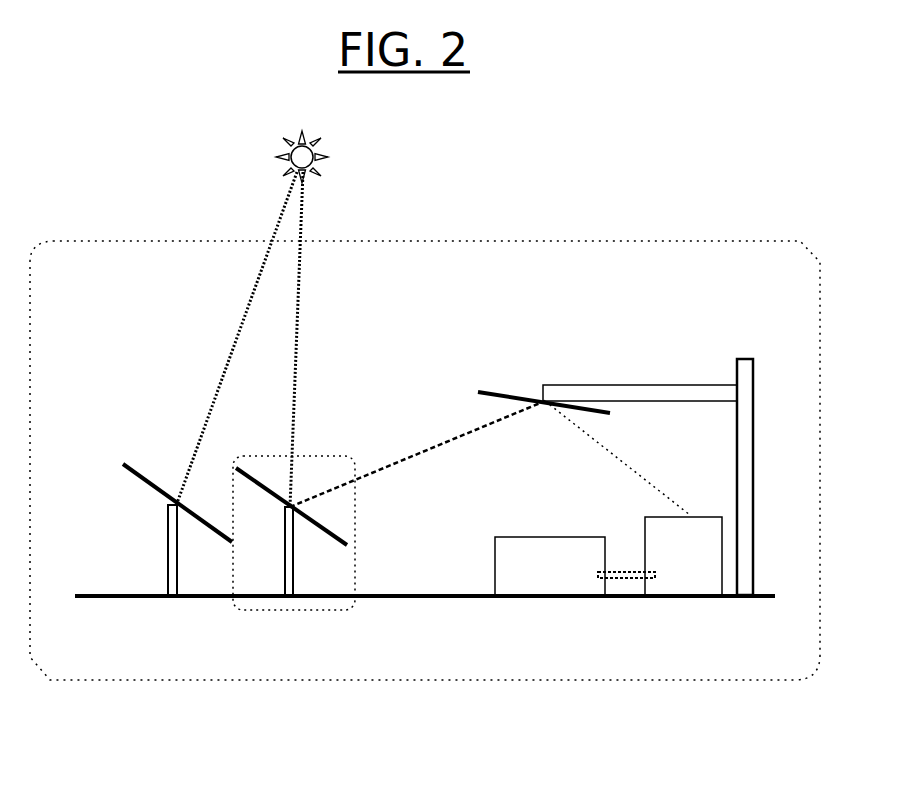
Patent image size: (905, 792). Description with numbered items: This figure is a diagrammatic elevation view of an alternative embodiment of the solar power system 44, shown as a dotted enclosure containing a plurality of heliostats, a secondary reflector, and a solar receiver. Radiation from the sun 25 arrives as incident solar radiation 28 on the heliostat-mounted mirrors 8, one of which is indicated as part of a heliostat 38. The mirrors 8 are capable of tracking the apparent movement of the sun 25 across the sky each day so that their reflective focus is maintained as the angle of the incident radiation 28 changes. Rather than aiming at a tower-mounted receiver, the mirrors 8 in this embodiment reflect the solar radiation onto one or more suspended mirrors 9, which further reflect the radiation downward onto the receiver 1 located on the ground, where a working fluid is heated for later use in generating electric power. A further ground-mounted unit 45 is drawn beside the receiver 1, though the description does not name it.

The receiver 1 is at (690, 583).
The mirrors 8 is at (145, 487).
The suspended mirrors 9 is at (480, 391).
The sun 25 is at (325, 170).
The incident solar radiation 28 is at (260, 275).
The heliostats 38 is at (275, 582).
The solar power system 44 is at (158, 667).
The storage / control unit 45 is at (587, 580).